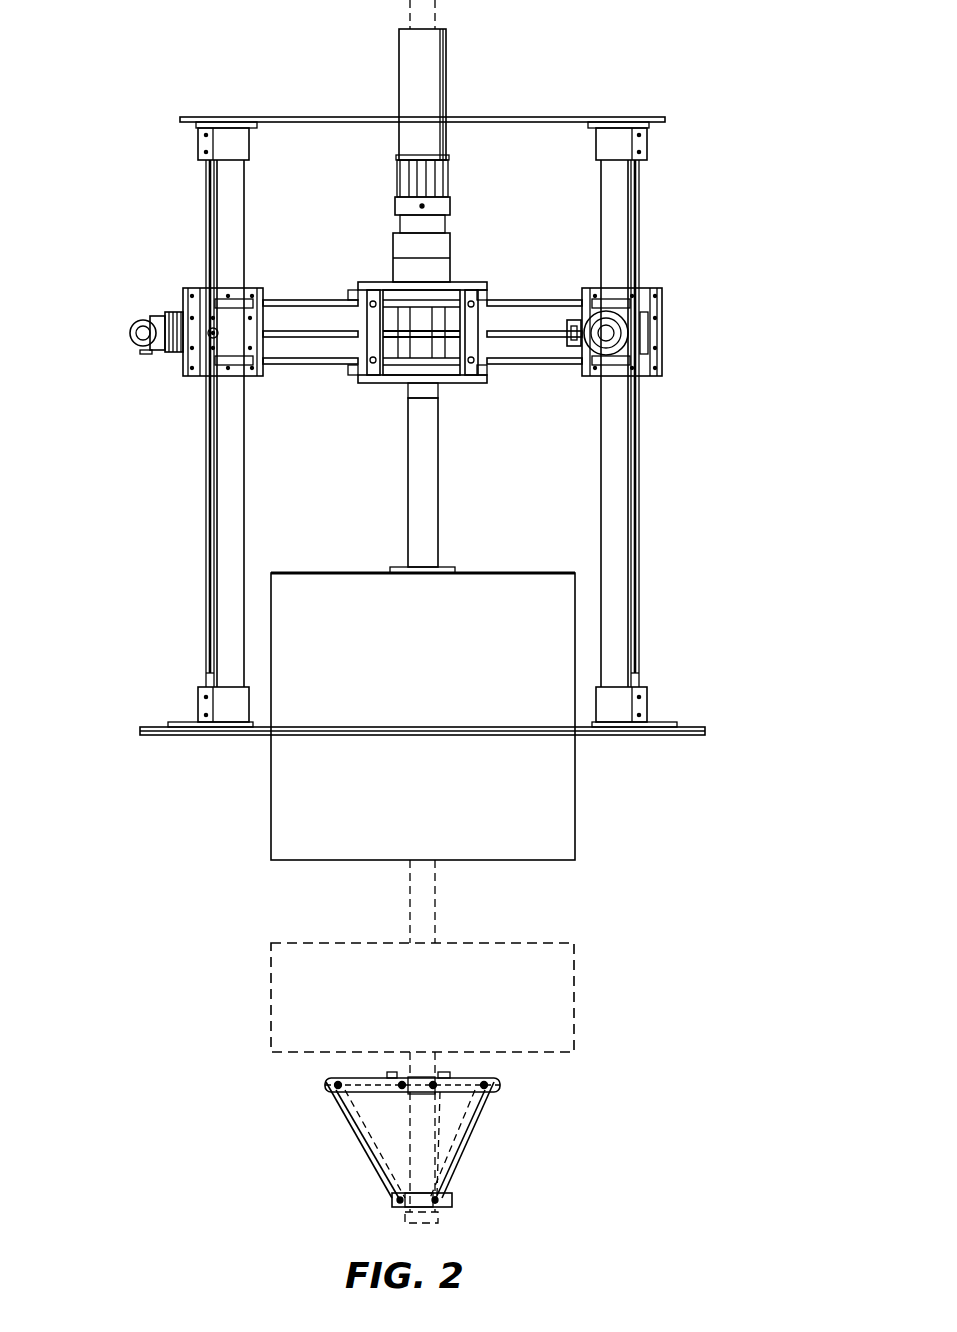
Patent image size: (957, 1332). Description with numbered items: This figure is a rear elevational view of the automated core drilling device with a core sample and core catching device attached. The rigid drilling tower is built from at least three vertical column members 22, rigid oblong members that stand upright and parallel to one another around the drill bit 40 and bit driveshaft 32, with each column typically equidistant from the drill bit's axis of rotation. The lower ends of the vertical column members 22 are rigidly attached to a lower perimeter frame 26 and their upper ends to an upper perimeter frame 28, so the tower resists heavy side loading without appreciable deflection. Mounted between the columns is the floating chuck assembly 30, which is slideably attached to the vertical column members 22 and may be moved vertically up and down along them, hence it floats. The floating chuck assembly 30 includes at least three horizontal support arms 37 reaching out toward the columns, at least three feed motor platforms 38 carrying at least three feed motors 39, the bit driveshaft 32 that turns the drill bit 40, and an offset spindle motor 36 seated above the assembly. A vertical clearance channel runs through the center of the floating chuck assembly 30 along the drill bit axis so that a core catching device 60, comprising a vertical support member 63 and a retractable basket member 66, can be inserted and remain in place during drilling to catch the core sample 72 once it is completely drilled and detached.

The vertical column members 22 is at (208, 527).
The lower perimeter frame 26 is at (690, 737).
The upper perimeter frame 28 is at (551, 117).
The floating chuck assembly 30 is at (470, 282).
The bit driveshaft 32 is at (440, 447).
The offset spindle motor 36 is at (430, 80).
The horizontal support arms 37 is at (531, 300).
The feed motor platforms 38 is at (665, 293).
The feed motors 39 is at (135, 338).
The drill bit 40 is at (578, 822).
The core catching device 60 is at (436, 12).
The vertical support member 63 is at (435, 903).
The retractable basket member 66 is at (475, 1152).
The core sample 72 is at (577, 1000).